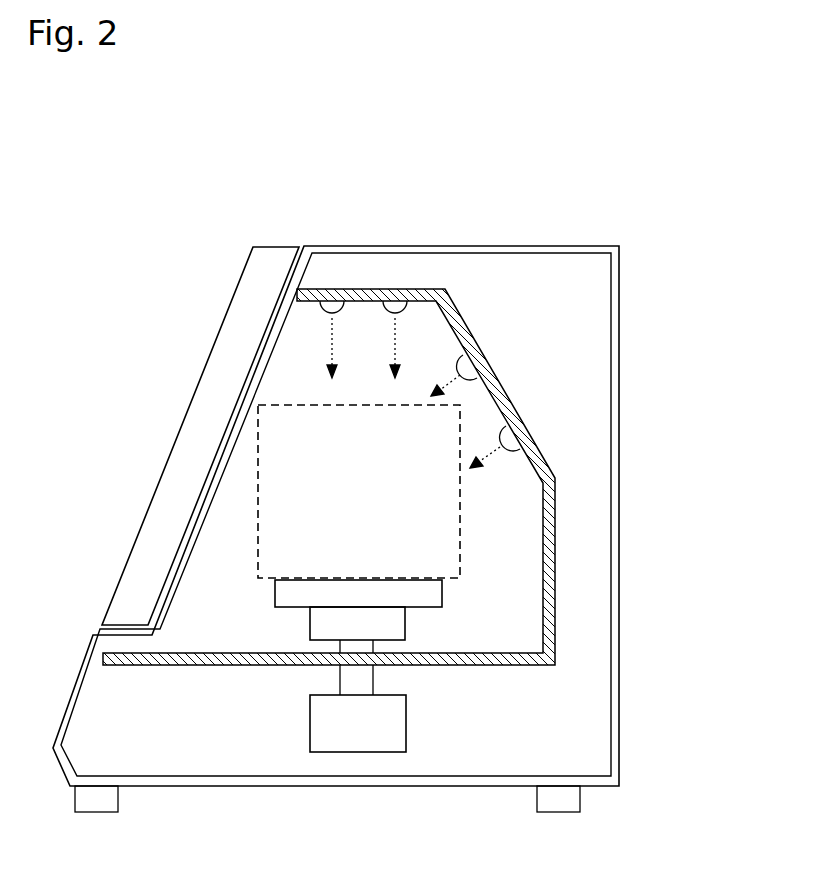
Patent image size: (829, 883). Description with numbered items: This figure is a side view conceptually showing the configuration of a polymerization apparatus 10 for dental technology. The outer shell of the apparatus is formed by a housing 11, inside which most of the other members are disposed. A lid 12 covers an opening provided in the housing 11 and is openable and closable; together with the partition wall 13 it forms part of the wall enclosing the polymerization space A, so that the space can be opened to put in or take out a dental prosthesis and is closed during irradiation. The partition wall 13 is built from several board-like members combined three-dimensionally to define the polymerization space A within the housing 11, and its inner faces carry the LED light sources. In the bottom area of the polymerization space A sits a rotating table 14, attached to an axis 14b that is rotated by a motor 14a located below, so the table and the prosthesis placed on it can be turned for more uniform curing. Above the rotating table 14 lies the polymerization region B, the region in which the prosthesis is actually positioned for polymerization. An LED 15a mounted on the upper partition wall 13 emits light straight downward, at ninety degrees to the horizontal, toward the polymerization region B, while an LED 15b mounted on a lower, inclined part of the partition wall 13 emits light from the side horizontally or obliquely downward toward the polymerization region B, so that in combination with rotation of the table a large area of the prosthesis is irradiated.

The polymerization apparatus for dental technology 10 is at (380, 126).
The housing 11 is at (557, 246).
The lid 12 is at (235, 316).
The partition wall 13 is at (446, 293).
The rotating table 14 is at (299, 592).
The motor 14a is at (388, 723).
The axis 14b is at (370, 680).
The LED 15a is at (328, 298).
The LED 15b is at (470, 368).
The polymerization space A is at (517, 586).
The polymerization region B is at (352, 502).